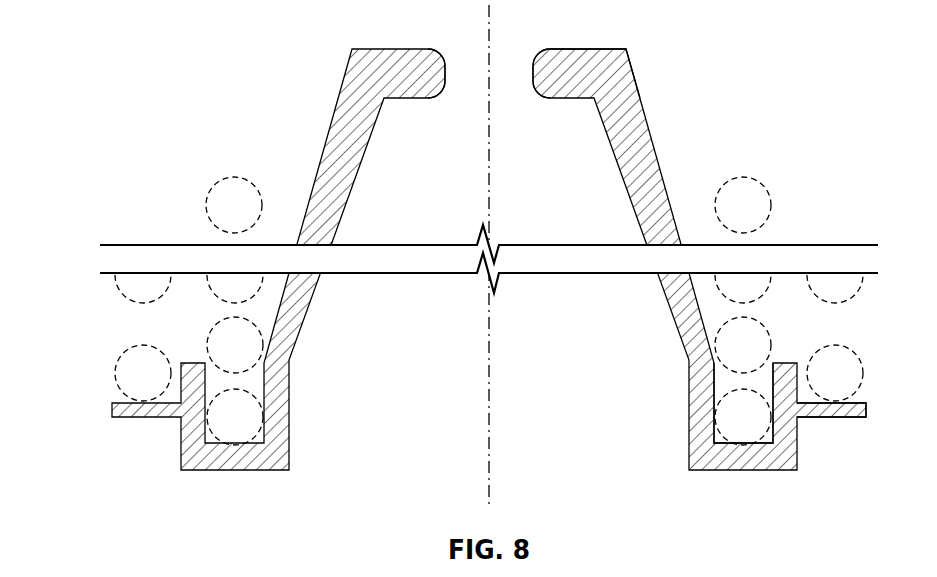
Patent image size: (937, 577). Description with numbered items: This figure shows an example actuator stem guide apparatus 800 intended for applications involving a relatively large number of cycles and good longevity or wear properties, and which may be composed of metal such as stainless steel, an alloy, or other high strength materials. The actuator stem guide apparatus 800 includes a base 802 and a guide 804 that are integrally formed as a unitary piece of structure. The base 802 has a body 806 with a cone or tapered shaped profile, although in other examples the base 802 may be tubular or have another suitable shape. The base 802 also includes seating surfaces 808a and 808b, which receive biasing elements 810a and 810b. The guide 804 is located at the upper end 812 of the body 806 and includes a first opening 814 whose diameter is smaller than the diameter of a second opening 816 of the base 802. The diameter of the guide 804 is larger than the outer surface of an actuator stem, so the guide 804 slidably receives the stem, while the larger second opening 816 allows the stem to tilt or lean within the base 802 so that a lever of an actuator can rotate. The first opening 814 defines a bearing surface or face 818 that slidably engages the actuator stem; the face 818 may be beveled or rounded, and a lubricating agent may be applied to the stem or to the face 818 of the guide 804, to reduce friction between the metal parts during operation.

The actuator stem guide apparatus 800 is at (468, 259).
The base 802 is at (673, 320).
The guide 804 is at (597, 52).
The body 806 is at (656, 155).
The seating surface 808a is at (723, 432).
The seating surface 808b is at (858, 396).
The biasing element 810a is at (233, 177).
The biasing element 810b is at (111, 378).
The upper end 812 is at (345, 73).
The first opening 814 is at (446, 92).
The second opening 816 is at (289, 422).
The bearing surface or face 818 is at (529, 80).